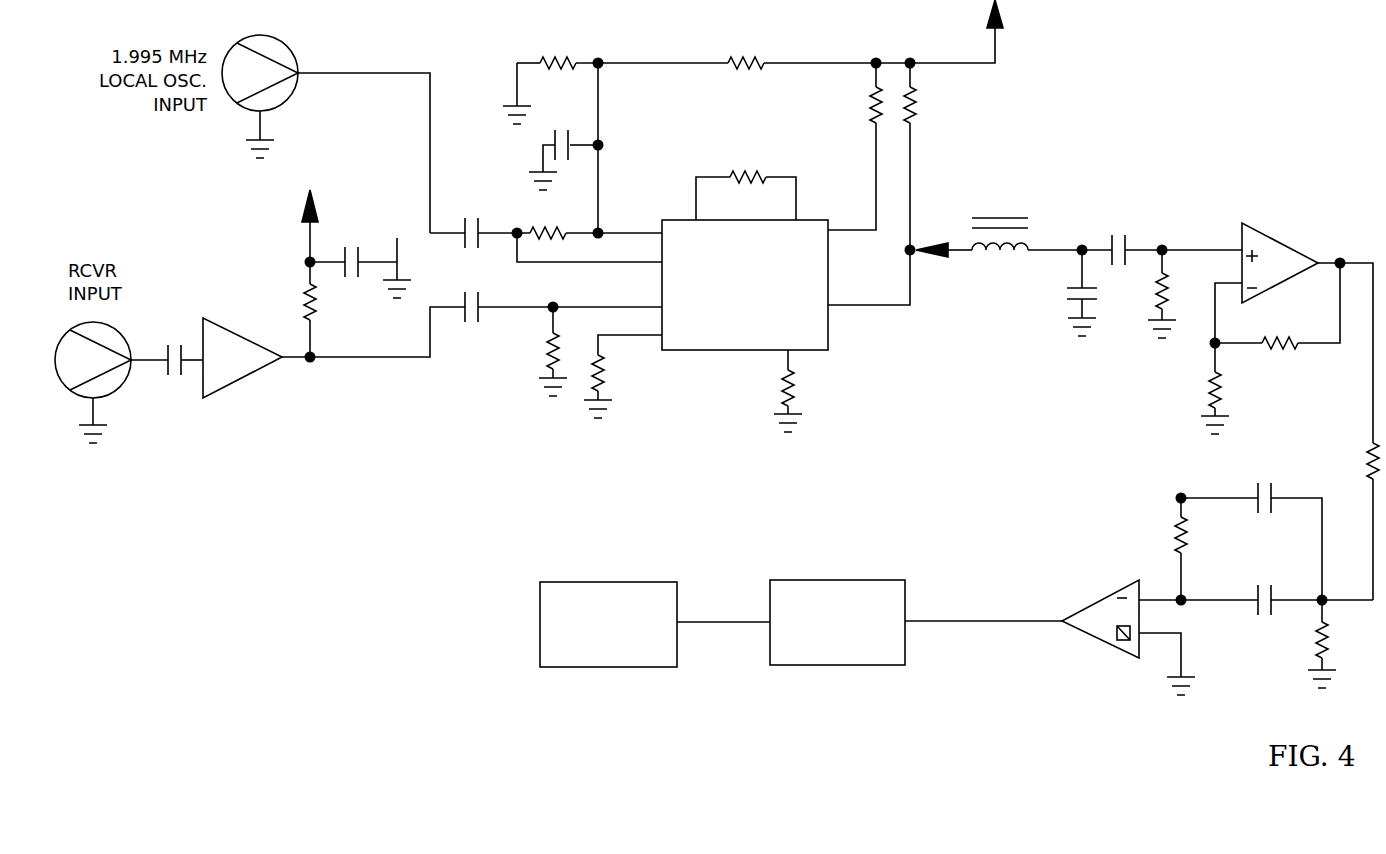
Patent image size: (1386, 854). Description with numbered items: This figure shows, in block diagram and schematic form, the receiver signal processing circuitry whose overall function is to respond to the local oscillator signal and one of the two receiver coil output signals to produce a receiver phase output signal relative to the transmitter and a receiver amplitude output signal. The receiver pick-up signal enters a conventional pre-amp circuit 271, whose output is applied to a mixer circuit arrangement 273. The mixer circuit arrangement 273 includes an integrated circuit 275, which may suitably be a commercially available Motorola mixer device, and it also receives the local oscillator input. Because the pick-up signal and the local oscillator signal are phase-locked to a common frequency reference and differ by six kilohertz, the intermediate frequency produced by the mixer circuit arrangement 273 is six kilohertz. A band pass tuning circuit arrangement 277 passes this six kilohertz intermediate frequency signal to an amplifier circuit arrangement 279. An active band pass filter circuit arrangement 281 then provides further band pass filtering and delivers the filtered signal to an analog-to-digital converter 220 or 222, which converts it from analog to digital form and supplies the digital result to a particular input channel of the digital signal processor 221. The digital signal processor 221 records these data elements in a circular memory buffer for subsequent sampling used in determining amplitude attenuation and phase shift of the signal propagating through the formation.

The pre-amp circuit 271 is at (254, 384).
The mixer circuit arrangement 273 is at (810, 322).
The integrated circuit 275 is at (717, 350).
The band pass tuning circuit arrangement 277 is at (1017, 262).
The amplifier circuit arrangement 279 is at (1306, 200).
The active band pass filter circuit arrangement 281 is at (1240, 477).
The digital signal processor 221 is at (605, 667).
The analog-to-digital converter 220 is at (890, 661).
The analog-to-digital converter 222 is at (819, 665).